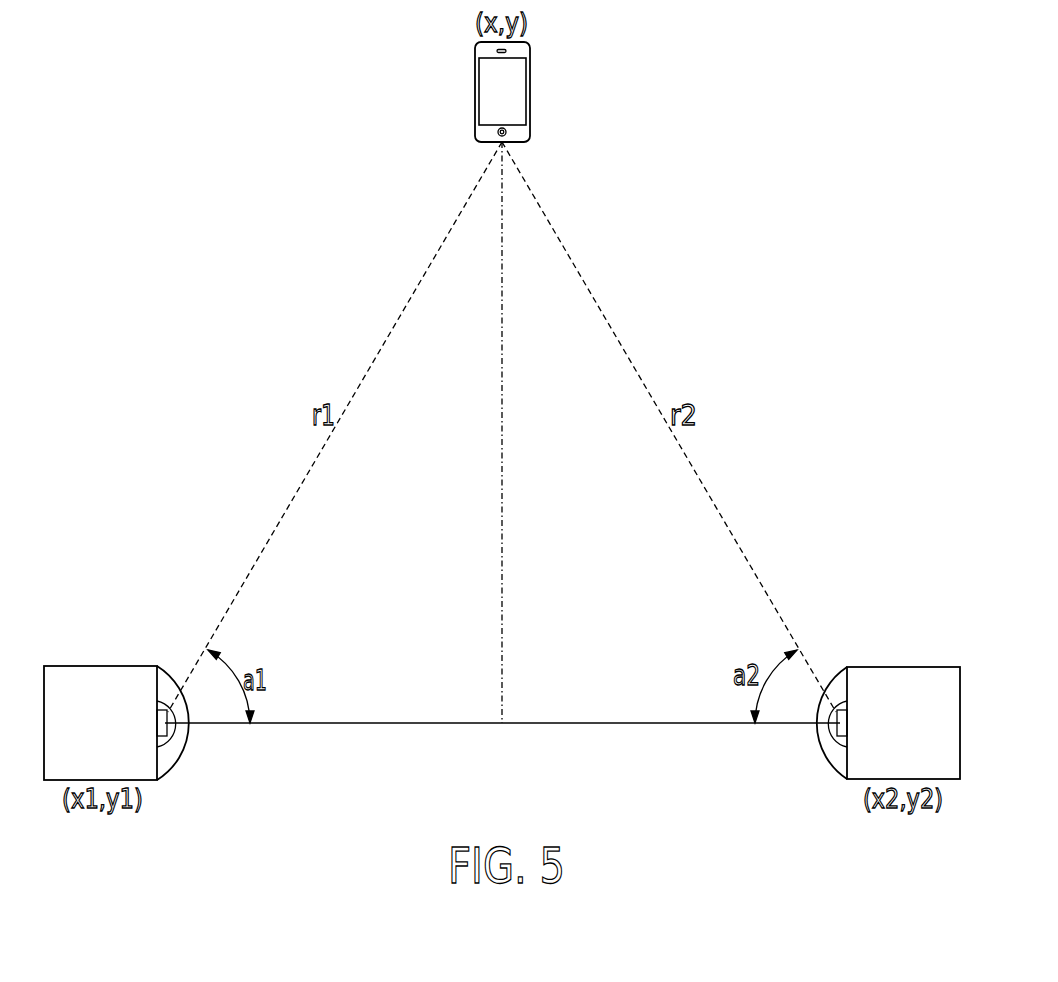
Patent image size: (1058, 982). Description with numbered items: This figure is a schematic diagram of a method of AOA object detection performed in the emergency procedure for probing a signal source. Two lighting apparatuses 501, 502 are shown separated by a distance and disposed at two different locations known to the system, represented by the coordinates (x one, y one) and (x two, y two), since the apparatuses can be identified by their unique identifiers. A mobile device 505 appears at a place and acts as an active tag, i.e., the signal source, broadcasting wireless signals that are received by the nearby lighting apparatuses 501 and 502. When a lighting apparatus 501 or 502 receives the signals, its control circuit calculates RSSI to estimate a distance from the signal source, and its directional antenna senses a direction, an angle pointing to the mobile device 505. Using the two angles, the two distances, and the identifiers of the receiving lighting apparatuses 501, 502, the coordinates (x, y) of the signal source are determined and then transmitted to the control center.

The lighting apparatus 501 is at (100, 666).
The lighting apparatus 502 is at (905, 667).
The mobile device 505 is at (531, 89).